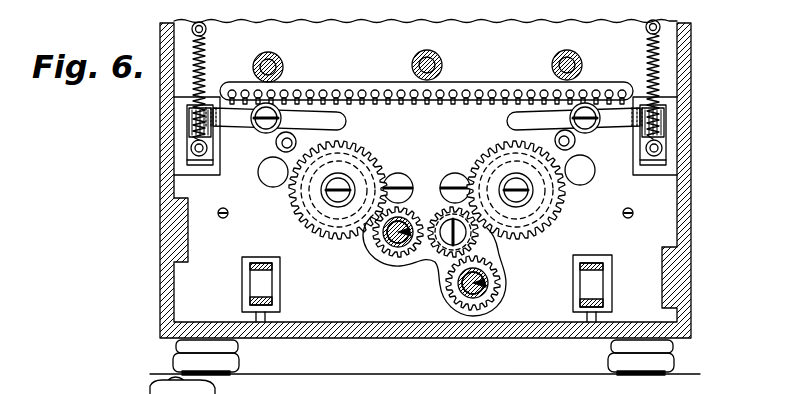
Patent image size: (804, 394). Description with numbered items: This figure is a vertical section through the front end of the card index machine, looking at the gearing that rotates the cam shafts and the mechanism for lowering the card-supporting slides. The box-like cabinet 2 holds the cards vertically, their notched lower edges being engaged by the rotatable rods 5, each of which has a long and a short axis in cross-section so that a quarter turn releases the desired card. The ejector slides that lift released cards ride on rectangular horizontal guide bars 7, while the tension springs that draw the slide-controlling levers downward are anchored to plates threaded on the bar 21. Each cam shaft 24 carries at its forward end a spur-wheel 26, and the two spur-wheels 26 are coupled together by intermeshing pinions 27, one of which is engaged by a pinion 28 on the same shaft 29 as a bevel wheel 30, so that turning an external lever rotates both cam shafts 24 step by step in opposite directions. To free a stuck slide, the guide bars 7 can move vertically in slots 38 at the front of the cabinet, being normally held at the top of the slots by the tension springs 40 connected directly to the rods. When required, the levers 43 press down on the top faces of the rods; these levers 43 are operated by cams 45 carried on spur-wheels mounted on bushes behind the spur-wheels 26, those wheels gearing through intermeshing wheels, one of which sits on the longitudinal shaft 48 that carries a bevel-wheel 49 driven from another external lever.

The box-like cabinet 2 is at (158, 243).
The rotatable rods 5 is at (466, 84).
The guide bars 7 is at (188, 152).
The bar 21 is at (255, 281).
The cam shaft 24 is at (324, 201).
The spur-wheel 26 is at (289, 199).
The pinion 27 is at (448, 213).
The pinion 28 is at (497, 263).
The shaft 29 is at (474, 285).
The bevel wheel 30 is at (500, 302).
The slots 38 is at (187, 117).
The tension springs 40 is at (206, 53).
The levers 43 is at (238, 122).
The cams 45 is at (348, 130).
The longitudinal shaft 48 is at (369, 254).
The bevel-wheel 49 is at (385, 243).